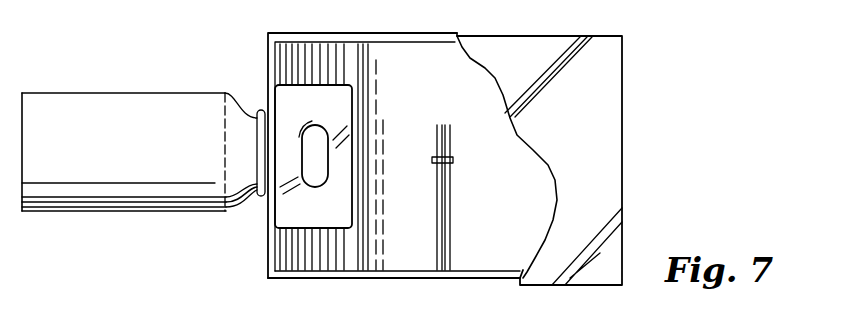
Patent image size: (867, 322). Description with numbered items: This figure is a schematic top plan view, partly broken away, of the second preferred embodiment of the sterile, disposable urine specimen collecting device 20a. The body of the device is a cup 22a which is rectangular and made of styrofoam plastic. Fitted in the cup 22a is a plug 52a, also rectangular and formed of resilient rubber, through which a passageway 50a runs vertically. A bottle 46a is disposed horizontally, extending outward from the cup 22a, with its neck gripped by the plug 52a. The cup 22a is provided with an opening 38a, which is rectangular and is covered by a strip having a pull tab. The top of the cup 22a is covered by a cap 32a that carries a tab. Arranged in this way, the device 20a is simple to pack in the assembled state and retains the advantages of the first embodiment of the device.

The device 20a is at (781, 54).
The cup 22a is at (263, 62).
The cap 32a is at (610, 130).
The opening 38a is at (453, 160).
The bottle 46a is at (67, 94).
The passageway 50a is at (322, 135).
The plug 52a is at (358, 137).